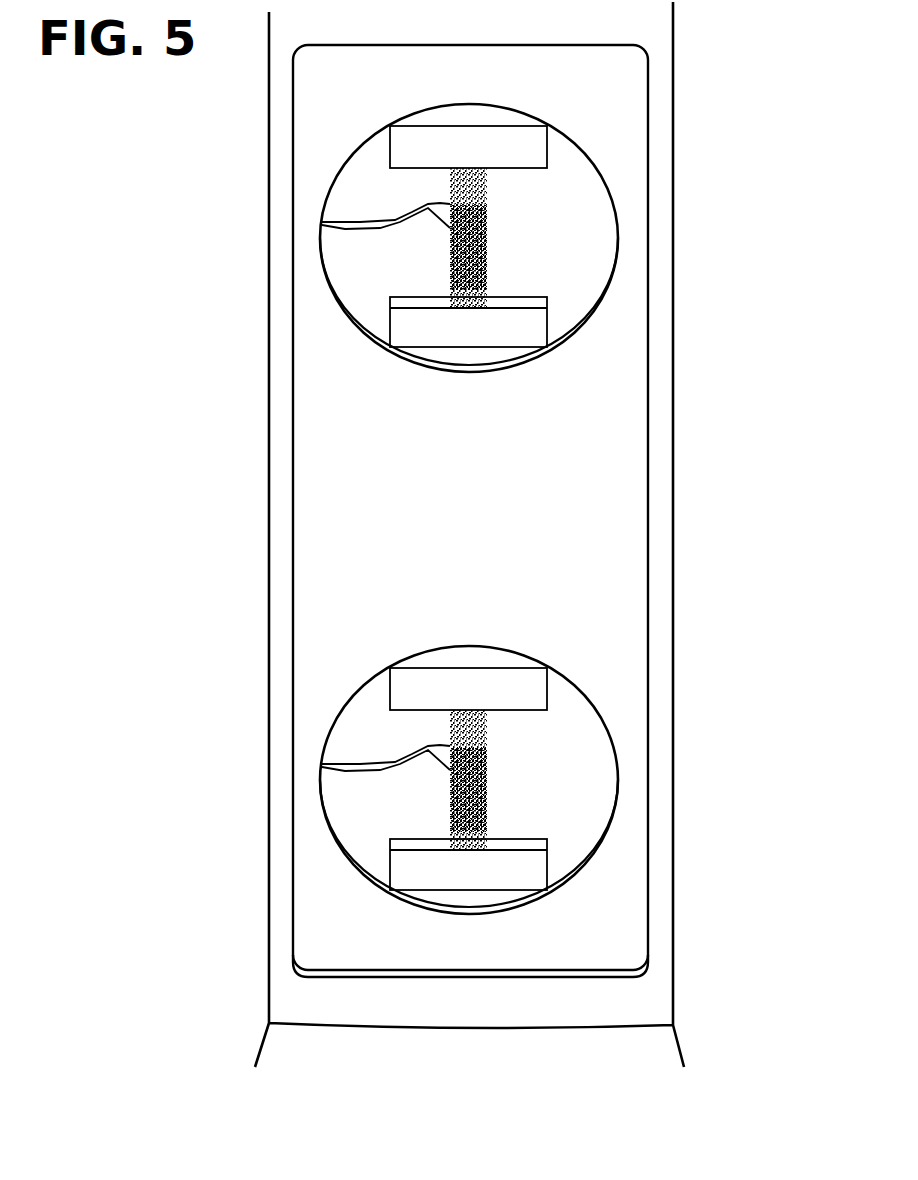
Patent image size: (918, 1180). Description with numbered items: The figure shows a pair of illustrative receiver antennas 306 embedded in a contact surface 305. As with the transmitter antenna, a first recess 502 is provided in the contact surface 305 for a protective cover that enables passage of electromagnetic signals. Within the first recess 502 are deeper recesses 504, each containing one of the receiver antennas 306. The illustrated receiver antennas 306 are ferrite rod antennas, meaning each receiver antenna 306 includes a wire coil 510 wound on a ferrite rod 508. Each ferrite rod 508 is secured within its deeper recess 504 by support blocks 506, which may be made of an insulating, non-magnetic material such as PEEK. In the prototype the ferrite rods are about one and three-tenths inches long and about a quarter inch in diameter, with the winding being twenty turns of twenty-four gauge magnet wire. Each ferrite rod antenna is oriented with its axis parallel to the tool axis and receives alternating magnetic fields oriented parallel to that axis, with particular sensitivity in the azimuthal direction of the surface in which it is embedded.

The contact surface 305 is at (598, 1028).
The receiver antenna 306 is at (573, 687).
The first recess 502 is at (350, 977).
The deeper recess 504 is at (353, 868).
The support block 506 is at (488, 690).
The ferrite rod 508 is at (487, 725).
The wire coil 510 is at (487, 770).